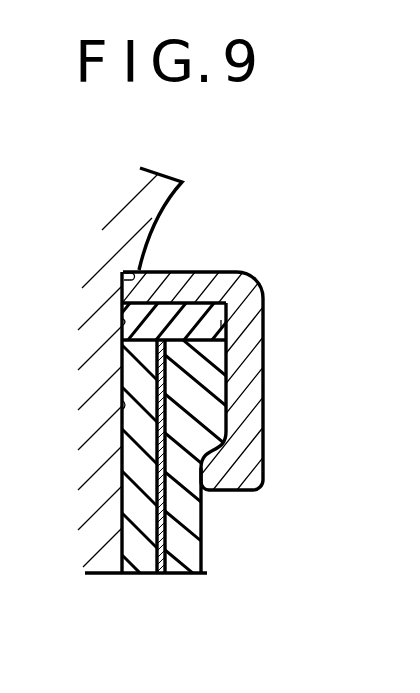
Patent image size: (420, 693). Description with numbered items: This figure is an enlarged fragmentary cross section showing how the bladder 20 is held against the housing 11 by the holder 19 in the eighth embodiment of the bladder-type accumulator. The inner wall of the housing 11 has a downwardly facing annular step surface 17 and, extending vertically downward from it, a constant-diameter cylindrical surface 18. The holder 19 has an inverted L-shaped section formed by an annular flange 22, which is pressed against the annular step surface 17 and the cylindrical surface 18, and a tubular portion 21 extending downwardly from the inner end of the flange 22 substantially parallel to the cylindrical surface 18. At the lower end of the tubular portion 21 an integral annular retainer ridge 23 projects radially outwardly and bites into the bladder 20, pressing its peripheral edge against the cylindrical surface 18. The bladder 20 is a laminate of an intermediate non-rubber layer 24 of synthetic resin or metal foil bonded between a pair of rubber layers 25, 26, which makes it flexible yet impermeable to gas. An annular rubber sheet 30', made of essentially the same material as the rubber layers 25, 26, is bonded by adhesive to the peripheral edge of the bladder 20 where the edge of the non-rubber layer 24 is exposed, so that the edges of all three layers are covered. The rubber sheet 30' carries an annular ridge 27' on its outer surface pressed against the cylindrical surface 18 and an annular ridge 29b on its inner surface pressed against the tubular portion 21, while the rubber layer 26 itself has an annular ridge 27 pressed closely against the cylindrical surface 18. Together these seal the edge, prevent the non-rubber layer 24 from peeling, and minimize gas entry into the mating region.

The housing 11 is at (127, 222).
The annular step surface 17 is at (118, 278).
The cylindrical surface 18 is at (120, 462).
The holder 19 is at (248, 288).
The bladder 20 is at (200, 543).
The tubular portion 21 is at (243, 392).
The annular flange 22 is at (170, 273).
The annular retainer ridge 23 is at (232, 470).
The intermediate non-rubber layer 24 is at (165, 574).
The rubber layer 25 is at (192, 563).
The rubber layer 26 is at (138, 577).
The annular ridge 27 is at (79, 408).
The annular ridge 27' is at (78, 320).
The annular ridge 29b is at (222, 324).
The annular rubber sheet 30' is at (177, 284).